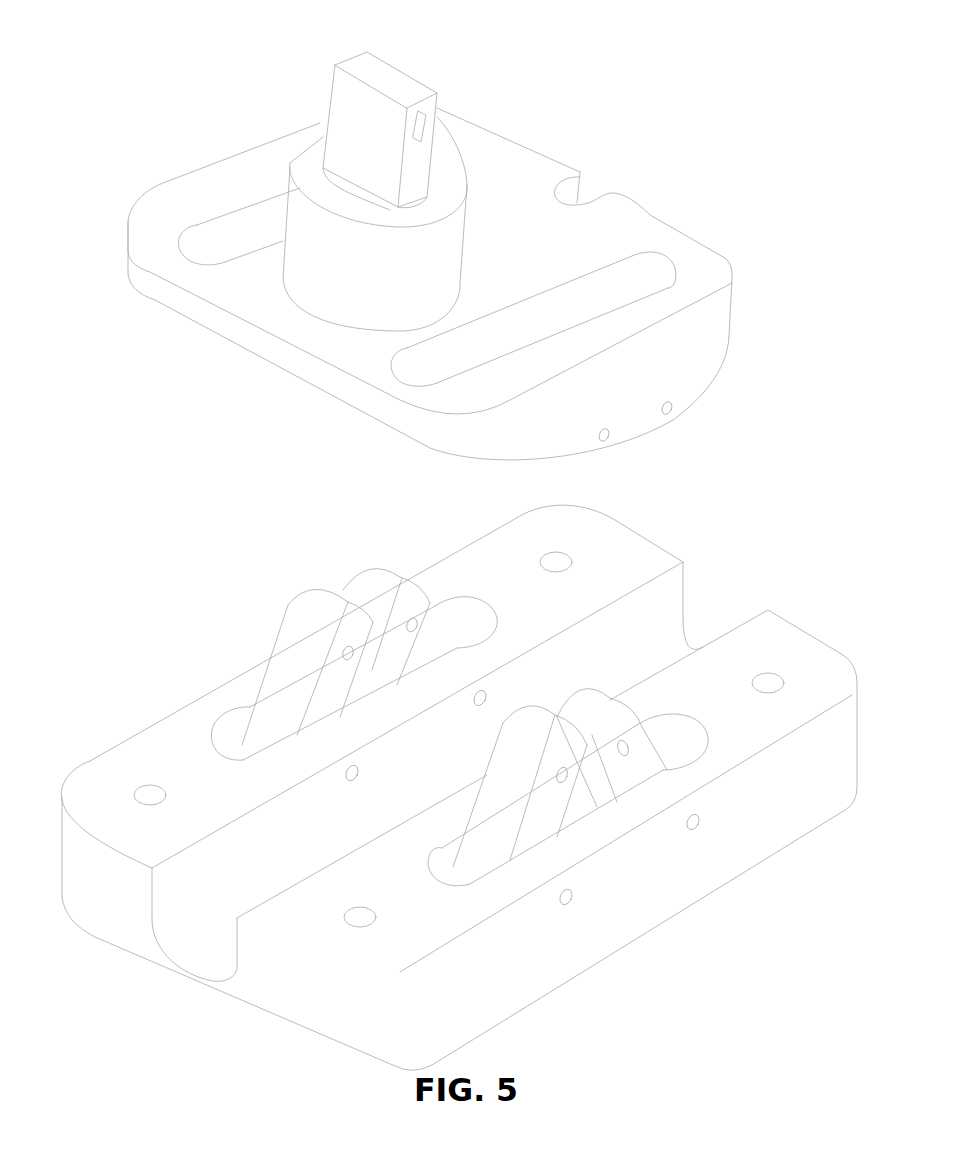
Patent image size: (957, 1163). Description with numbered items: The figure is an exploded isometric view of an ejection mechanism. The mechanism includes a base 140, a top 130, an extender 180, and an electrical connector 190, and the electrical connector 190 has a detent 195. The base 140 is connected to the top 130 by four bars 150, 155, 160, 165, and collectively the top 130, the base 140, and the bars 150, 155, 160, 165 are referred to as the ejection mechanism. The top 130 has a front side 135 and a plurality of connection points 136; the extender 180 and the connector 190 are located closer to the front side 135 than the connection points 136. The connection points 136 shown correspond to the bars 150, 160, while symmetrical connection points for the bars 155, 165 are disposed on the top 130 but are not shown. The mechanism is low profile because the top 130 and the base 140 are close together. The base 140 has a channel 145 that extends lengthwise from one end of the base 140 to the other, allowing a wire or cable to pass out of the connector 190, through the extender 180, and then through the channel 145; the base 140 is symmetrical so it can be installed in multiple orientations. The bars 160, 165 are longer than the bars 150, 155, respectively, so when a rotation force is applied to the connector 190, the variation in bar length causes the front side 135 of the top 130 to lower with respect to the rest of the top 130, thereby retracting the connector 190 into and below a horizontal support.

The top 130 is at (583, 237).
The front side 135 is at (273, 319).
The connection points 136 is at (668, 408).
The extender 180 is at (310, 228).
The electrical connector 190 is at (413, 127).
The detent 195 is at (425, 122).
The base 140 is at (588, 928).
The channel 145 is at (643, 646).
The bar 150 is at (630, 775).
The bar 155 is at (373, 580).
The bar 160 is at (558, 807).
The bar 165 is at (310, 649).